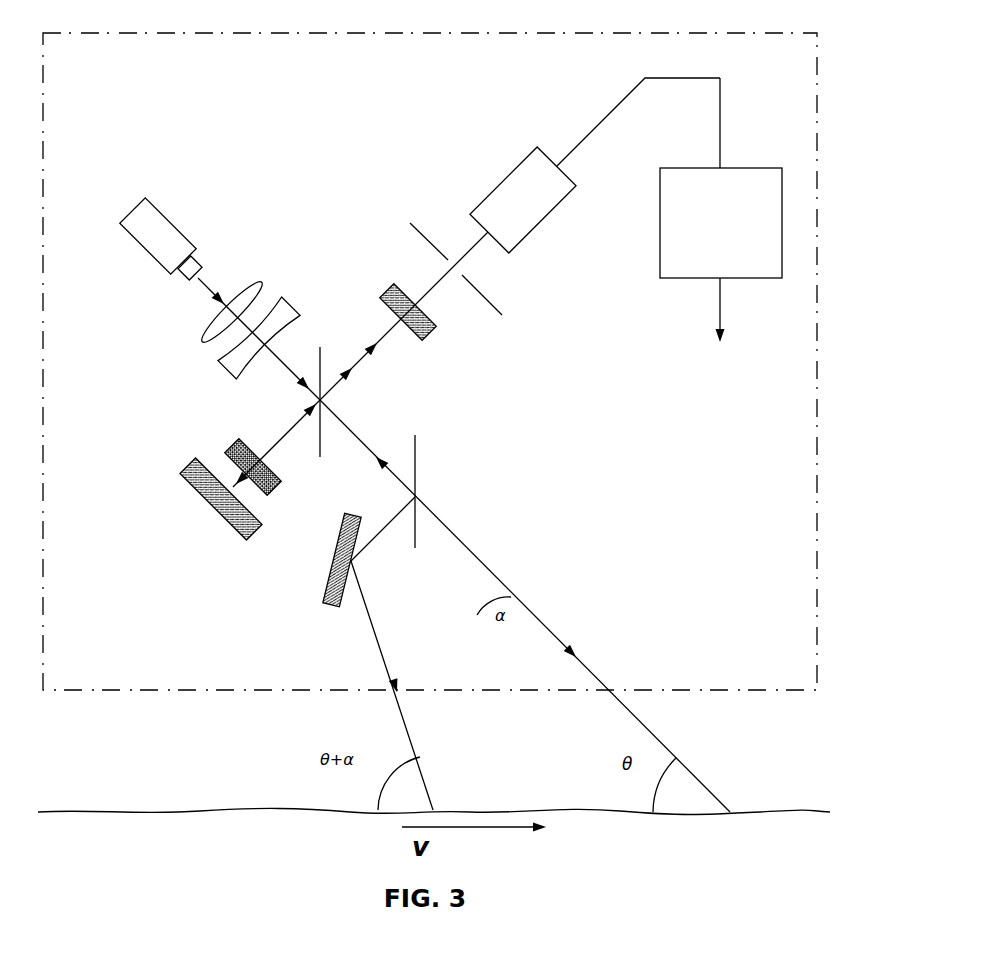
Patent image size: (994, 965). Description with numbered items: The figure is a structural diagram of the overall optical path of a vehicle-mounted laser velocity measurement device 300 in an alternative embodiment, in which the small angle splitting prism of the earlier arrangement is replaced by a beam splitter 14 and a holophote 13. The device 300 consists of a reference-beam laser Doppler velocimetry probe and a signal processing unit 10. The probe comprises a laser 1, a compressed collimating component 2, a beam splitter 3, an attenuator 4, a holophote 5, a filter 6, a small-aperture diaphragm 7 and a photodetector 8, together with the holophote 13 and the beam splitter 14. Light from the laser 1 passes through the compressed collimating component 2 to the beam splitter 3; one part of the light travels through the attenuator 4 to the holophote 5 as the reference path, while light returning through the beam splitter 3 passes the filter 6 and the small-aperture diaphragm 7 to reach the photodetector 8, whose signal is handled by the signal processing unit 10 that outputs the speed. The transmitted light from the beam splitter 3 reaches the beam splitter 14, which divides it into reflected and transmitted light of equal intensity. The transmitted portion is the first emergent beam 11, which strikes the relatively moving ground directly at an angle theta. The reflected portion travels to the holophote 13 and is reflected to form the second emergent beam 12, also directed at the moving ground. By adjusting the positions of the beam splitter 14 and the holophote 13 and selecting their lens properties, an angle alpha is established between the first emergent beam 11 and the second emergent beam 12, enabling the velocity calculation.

The vehicle-mounted laser velocity measurement device 300 is at (774, 24).
The laser 1 is at (146, 200).
The compressed collimating component 2 is at (247, 287).
The beam splitter 3 is at (320, 348).
The attenuator 4 is at (228, 449).
The holophote 5 is at (222, 526).
The filter 6 is at (428, 328).
The small-aperture diaphragm 7 is at (410, 223).
The photodetector 8 is at (534, 145).
The signal processing unit 10 is at (660, 278).
The first emergent beam 11 is at (564, 640).
The second emergent beam 12 is at (396, 748).
The holophote 13 is at (322, 606).
The beam splitter 14 is at (416, 440).